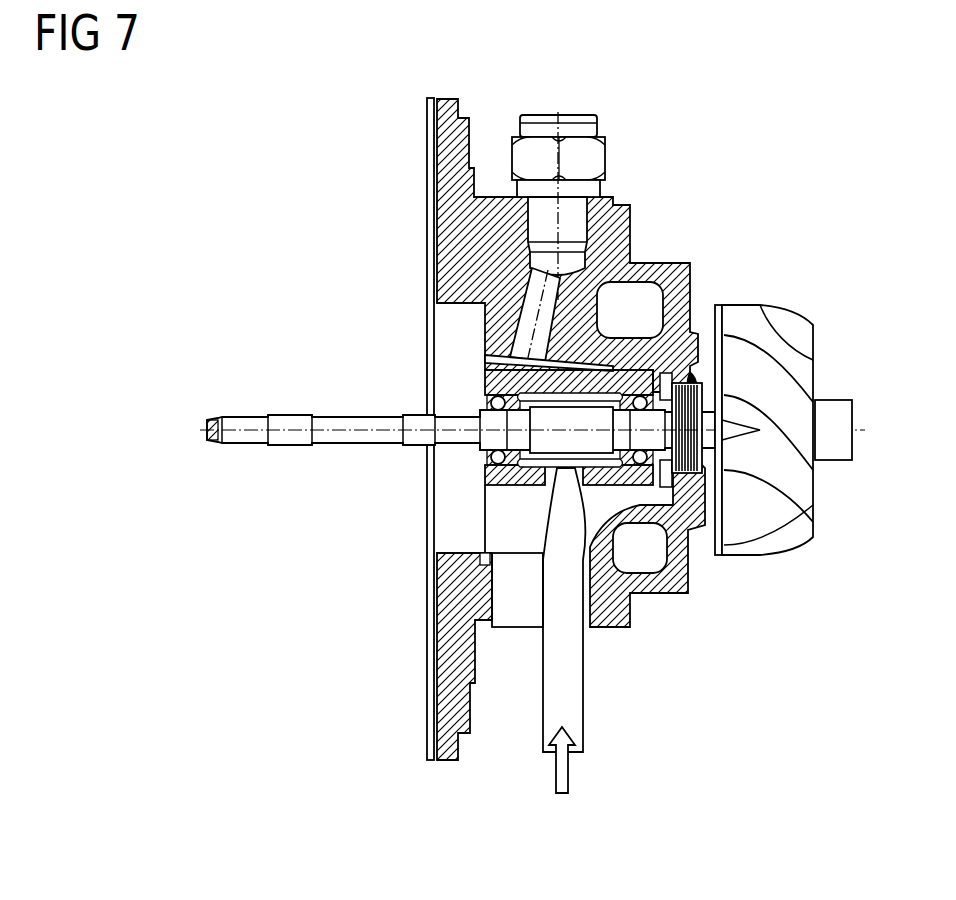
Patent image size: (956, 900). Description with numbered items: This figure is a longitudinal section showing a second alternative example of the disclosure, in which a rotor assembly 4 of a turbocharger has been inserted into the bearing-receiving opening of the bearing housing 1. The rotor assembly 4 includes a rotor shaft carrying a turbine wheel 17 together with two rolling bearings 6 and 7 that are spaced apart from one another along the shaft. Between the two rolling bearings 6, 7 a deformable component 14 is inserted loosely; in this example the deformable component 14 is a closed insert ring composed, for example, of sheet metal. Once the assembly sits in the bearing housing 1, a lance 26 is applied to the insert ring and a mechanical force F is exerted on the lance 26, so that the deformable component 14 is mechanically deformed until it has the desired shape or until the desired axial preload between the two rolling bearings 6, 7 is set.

The bearing housing 1 is at (450, 207).
The rotor assembly 4 is at (748, 283).
The turbine wheel 17 is at (778, 333).
The rolling bearing 7 is at (497, 489).
The rolling bearing 6 is at (657, 473).
The deformable component 14 is at (636, 612).
The lance 26 is at (585, 713).